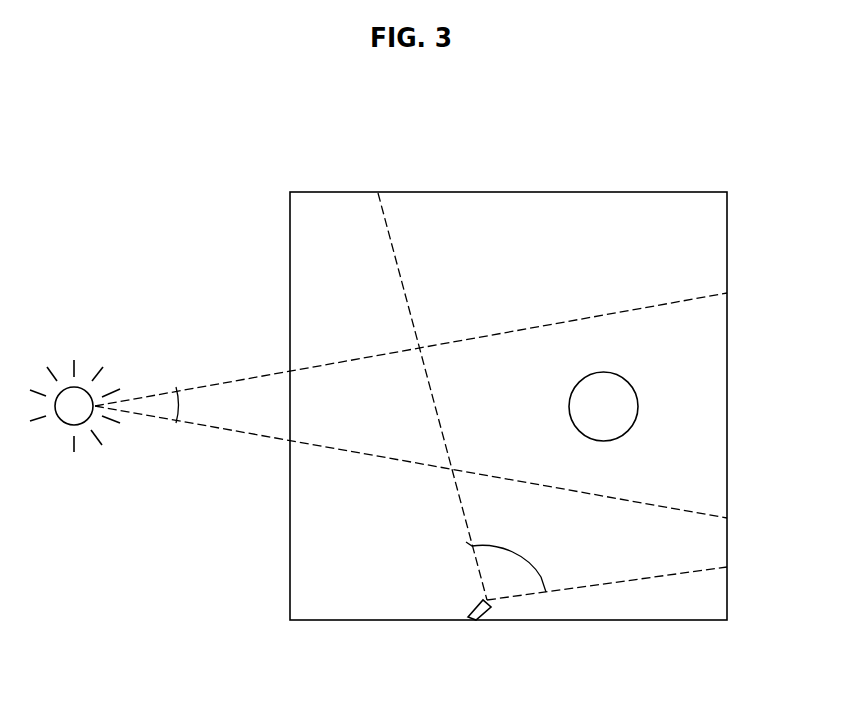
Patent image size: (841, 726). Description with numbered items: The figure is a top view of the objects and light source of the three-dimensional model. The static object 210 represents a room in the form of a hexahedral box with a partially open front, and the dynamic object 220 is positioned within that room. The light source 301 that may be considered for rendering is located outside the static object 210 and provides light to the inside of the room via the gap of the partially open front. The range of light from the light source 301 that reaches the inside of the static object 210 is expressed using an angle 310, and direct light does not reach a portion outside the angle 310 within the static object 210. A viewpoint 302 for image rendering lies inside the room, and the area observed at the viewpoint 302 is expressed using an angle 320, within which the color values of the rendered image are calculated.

The static object 210 is at (507, 191).
The dynamic object 220 is at (638, 392).
The light source 301 is at (65, 395).
The viewpoint 302 is at (478, 621).
The angle 310 is at (178, 403).
The angle 320 is at (541, 577).